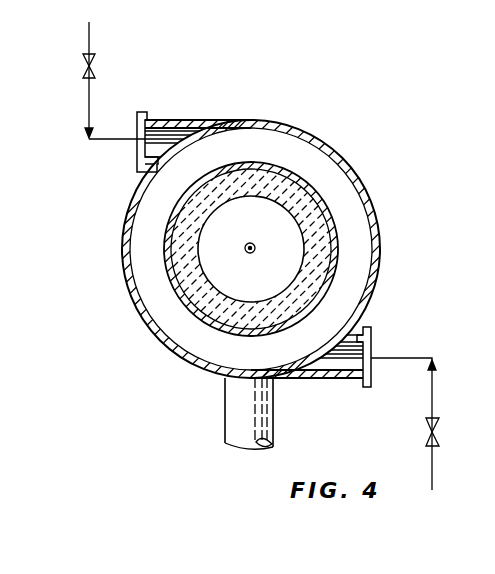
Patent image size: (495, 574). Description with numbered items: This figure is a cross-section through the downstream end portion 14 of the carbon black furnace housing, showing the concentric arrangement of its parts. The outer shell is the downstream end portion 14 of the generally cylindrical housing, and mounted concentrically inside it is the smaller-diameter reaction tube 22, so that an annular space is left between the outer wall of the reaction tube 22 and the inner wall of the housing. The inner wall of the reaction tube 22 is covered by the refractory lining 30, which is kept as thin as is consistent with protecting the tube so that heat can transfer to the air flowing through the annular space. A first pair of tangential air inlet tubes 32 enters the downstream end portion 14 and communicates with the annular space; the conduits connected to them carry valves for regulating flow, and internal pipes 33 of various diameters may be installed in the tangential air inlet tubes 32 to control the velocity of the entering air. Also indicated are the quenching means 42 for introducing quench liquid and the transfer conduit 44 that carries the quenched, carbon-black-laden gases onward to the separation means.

The downstream end portion 14 is at (374, 191).
The reaction tube 22 is at (330, 208).
The refractory lining 30 is at (317, 234).
The tangential air inlet tubes 32 is at (188, 120).
The internal pipes 33 is at (153, 143).
The quenching means 42 is at (249, 257).
The transfer conduit 44 is at (225, 417).